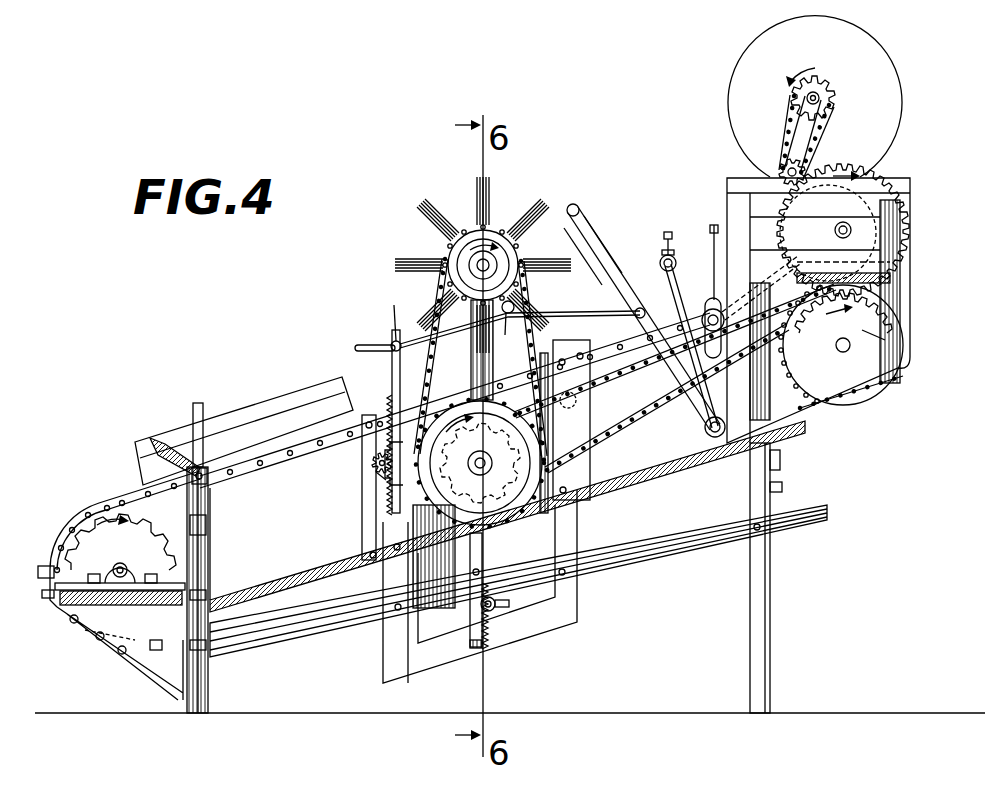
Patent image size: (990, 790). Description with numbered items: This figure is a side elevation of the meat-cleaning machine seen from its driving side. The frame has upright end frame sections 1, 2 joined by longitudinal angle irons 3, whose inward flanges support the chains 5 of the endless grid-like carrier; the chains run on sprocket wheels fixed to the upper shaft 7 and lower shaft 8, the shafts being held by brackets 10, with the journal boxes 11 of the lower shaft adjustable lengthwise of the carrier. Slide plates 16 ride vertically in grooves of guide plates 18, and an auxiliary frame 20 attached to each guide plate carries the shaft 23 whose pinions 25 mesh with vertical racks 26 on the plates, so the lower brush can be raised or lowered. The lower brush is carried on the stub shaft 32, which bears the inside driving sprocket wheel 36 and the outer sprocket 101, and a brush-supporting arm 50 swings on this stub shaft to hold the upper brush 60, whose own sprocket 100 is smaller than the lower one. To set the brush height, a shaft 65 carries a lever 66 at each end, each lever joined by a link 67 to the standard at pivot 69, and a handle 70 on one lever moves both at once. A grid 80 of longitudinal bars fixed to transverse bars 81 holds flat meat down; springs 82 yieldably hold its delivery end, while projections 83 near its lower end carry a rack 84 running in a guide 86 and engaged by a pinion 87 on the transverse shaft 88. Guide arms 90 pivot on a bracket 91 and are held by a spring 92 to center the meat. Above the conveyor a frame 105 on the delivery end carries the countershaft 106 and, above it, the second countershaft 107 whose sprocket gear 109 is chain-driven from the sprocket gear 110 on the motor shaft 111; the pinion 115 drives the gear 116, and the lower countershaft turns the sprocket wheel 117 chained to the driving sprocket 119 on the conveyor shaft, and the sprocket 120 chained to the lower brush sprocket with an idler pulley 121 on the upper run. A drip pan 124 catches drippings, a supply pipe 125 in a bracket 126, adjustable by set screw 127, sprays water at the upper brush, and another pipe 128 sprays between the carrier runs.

The end frame section 1 is at (772, 638).
The end frame section 2 is at (210, 690).
The angle irons 3 is at (255, 478).
The chains 5 is at (88, 508).
The upper shaft 7 is at (850, 344).
The lower shaft 8 is at (128, 567).
The brackets 10 is at (118, 628).
The journal boxes 11 is at (121, 560).
The plates 16 is at (432, 572).
The guide plates 18 is at (372, 508).
The auxiliary frame 20 is at (390, 655).
The shaft 23 is at (492, 612).
The pinions 25 is at (500, 608).
The vertical racks 26 is at (474, 648).
The stub shaft 32 is at (470, 462).
The driving sprocket wheel 36 is at (550, 446).
The brush-supporting arm 50 is at (494, 376).
The upper brush 60 is at (428, 212).
The shaft 65 is at (712, 440).
The lever 66 is at (652, 379).
The link 67 is at (592, 310).
The pivotal attachment 69 is at (467, 356).
The handle 70 is at (592, 230).
The grid 80 is at (462, 340).
The transverse bars 81 is at (712, 251).
The springs 82 is at (722, 300).
The projections 83 is at (390, 311).
The rack 84 is at (392, 368).
The guide 86 is at (388, 482).
The pinion 87 is at (372, 463).
The transverse shaft 88 is at (378, 474).
The guide arms 90 is at (262, 398).
The bracket 91 is at (199, 403).
The spring 92 is at (165, 440).
The sprocket 100 is at (505, 262).
The sprocket 101 is at (492, 522).
The frame 105 is at (908, 300).
The countershaft 106 is at (852, 231).
The second countershaft 107 is at (785, 172).
The sprocket gear 109 is at (822, 160).
The sprocket gear 110 is at (822, 100).
The motor shaft 111 is at (822, 90).
The pinion 115 is at (795, 160).
The gear 116 is at (880, 170).
The sprocket wheel 117 is at (900, 258).
The driving sprocket 119 is at (885, 340).
The sprocket 120 is at (782, 236).
The idler pulley 121 is at (711, 300).
The drip pan 124 is at (693, 556).
The supply pipe 125 is at (675, 252).
The bracket 126 is at (666, 295).
The set screw 127 is at (668, 230).
The pipe 128 is at (578, 401).